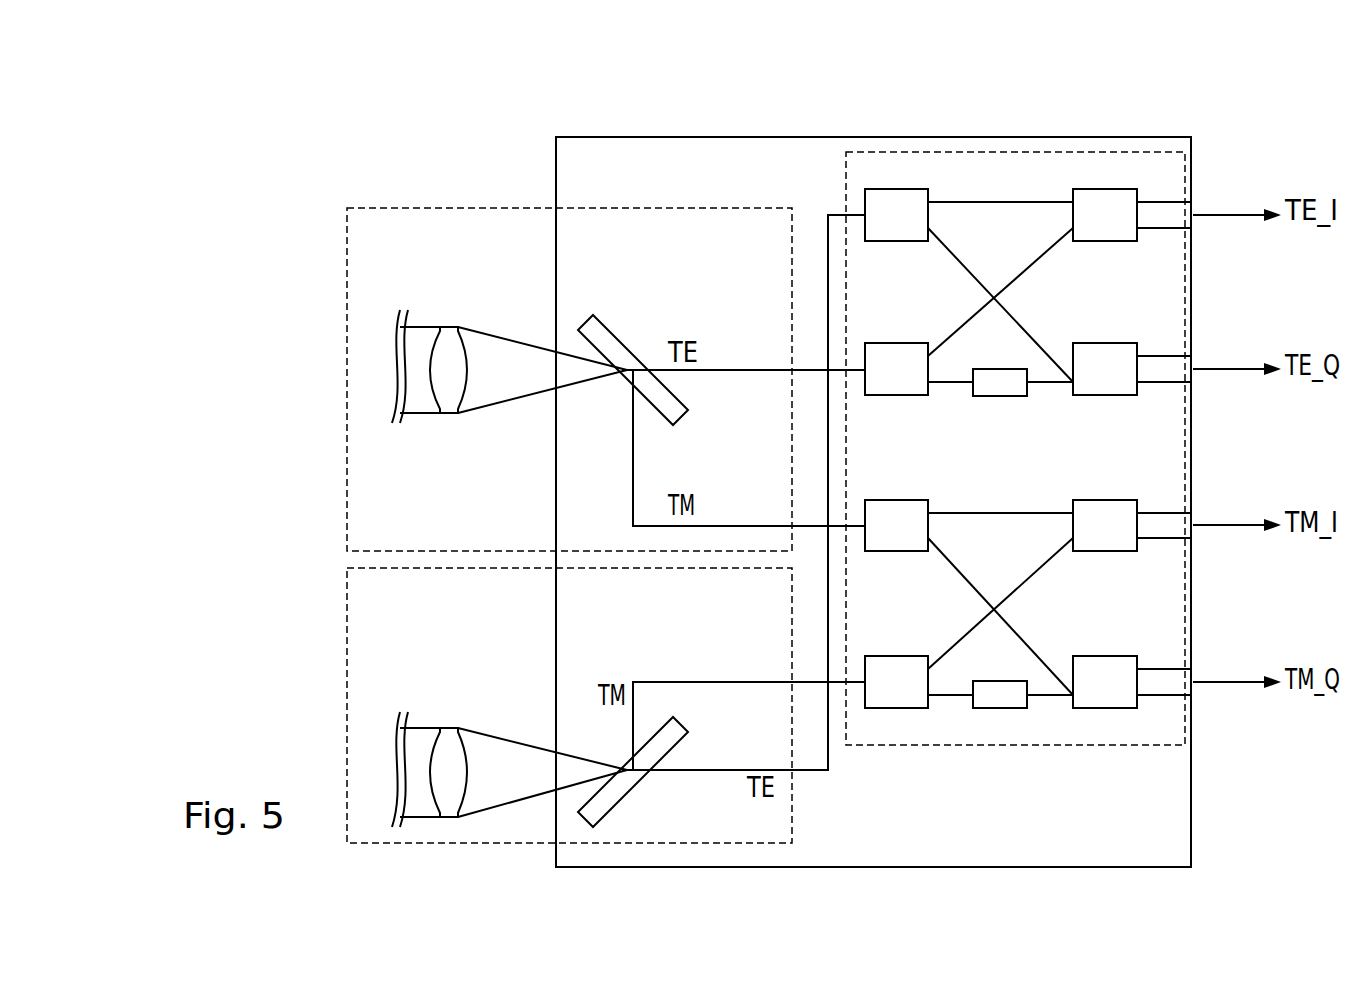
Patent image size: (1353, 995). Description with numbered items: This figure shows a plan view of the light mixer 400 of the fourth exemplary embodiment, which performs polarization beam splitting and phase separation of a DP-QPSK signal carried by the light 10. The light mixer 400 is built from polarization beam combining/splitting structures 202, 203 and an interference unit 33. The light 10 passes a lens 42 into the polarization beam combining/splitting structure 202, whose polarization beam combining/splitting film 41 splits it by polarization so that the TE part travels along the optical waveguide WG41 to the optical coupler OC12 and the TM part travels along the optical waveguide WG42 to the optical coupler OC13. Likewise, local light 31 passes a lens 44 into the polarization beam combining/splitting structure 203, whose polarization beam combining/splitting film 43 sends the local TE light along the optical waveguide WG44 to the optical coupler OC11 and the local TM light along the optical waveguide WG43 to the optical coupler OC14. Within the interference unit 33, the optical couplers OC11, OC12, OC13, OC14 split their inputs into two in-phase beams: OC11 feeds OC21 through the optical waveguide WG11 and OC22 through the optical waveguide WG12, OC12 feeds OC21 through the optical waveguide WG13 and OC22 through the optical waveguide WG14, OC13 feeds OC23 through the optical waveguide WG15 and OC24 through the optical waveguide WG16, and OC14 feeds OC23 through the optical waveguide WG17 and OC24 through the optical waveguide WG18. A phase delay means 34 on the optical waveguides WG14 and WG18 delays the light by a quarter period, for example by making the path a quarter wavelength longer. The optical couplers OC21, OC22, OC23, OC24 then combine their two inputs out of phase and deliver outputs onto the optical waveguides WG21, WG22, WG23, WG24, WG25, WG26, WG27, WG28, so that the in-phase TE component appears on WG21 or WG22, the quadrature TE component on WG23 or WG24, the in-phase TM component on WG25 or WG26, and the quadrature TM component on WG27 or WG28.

The light mixer 400 is at (813, 60).
The interference unit 33 is at (1062, 152).
The polarization beam combining/splitting structure 202 is at (461, 208).
The polarization beam combining/splitting structure 203 is at (347, 608).
The lens 42 is at (450, 325).
The lens 44 is at (449, 725).
The light 10 is at (482, 408).
The local light 31 is at (503, 738).
The polarization beam combining/splitting film 41 is at (607, 328).
The polarization beam combining/splitting film 43 is at (642, 775).
The phase delay means 34 is at (994, 369).
The optical waveguide WG41 is at (736, 368).
The optical waveguide WG42 is at (736, 524).
The optical waveguide WG43 is at (736, 681).
The optical waveguide WG44 is at (736, 769).
The optical waveguide WG11 is at (952, 201).
The optical waveguide WG12 is at (955, 257).
The optical waveguide WG13 is at (1063, 238).
The optical waveguide WG14 is at (1052, 384).
The optical waveguide WG15 is at (950, 512).
The optical waveguide WG16 is at (953, 565).
The optical waveguide WG17 is at (1065, 546).
The optical waveguide WG18 is at (1052, 697).
The optical waveguide WG21 is at (1172, 196).
The optical waveguide WG22 is at (1172, 232).
The optical waveguide WG23 is at (1172, 351).
The optical waveguide WG24 is at (1172, 386).
The optical waveguide WG25 is at (1172, 508).
The optical waveguide WG26 is at (1172, 542).
The optical waveguide WG27 is at (1172, 665).
The optical waveguide WG28 is at (1172, 699).
The optical coupler OC11 is at (873, 242).
The optical coupler OC12 is at (868, 397).
The optical coupler OC13 is at (913, 499).
The optical coupler OC14 is at (873, 655).
The optical coupler OC21 is at (1128, 242).
The optical coupler OC22 is at (1123, 397).
The optical coupler OC23 is at (1098, 499).
The optical coupler OC24 is at (1133, 655).